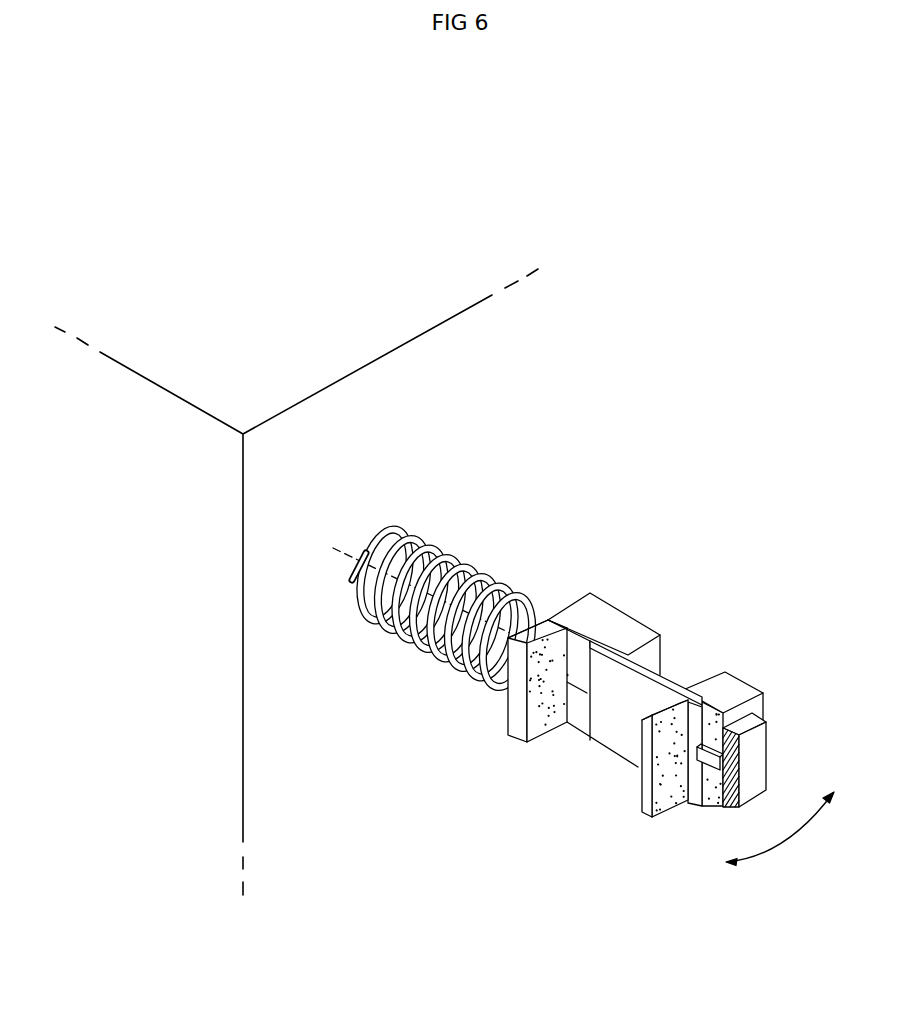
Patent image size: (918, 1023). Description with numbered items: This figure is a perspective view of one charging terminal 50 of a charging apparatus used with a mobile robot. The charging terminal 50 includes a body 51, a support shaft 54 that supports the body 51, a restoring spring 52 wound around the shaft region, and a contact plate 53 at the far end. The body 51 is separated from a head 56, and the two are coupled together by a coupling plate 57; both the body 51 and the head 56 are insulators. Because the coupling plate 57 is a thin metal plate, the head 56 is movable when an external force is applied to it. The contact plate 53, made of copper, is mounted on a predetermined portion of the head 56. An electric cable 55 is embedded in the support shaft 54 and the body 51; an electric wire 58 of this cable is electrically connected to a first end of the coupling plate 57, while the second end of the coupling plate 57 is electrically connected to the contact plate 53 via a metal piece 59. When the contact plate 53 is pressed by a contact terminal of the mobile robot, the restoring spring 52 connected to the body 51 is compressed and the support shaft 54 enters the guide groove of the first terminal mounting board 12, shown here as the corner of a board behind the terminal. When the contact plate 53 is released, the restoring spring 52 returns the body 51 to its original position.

The first terminal mounting board 12 is at (392, 375).
The charging terminal 50 is at (654, 519).
The body 51 is at (617, 617).
The restoring spring 52 is at (412, 643).
The contact plate 53 is at (758, 753).
The support shaft 54 is at (360, 588).
The electric cable 55 is at (348, 543).
The head 56 is at (732, 690).
The coupling plate 57 is at (672, 686).
The electric wire 58 is at (568, 677).
The metal piece 59 is at (698, 762).